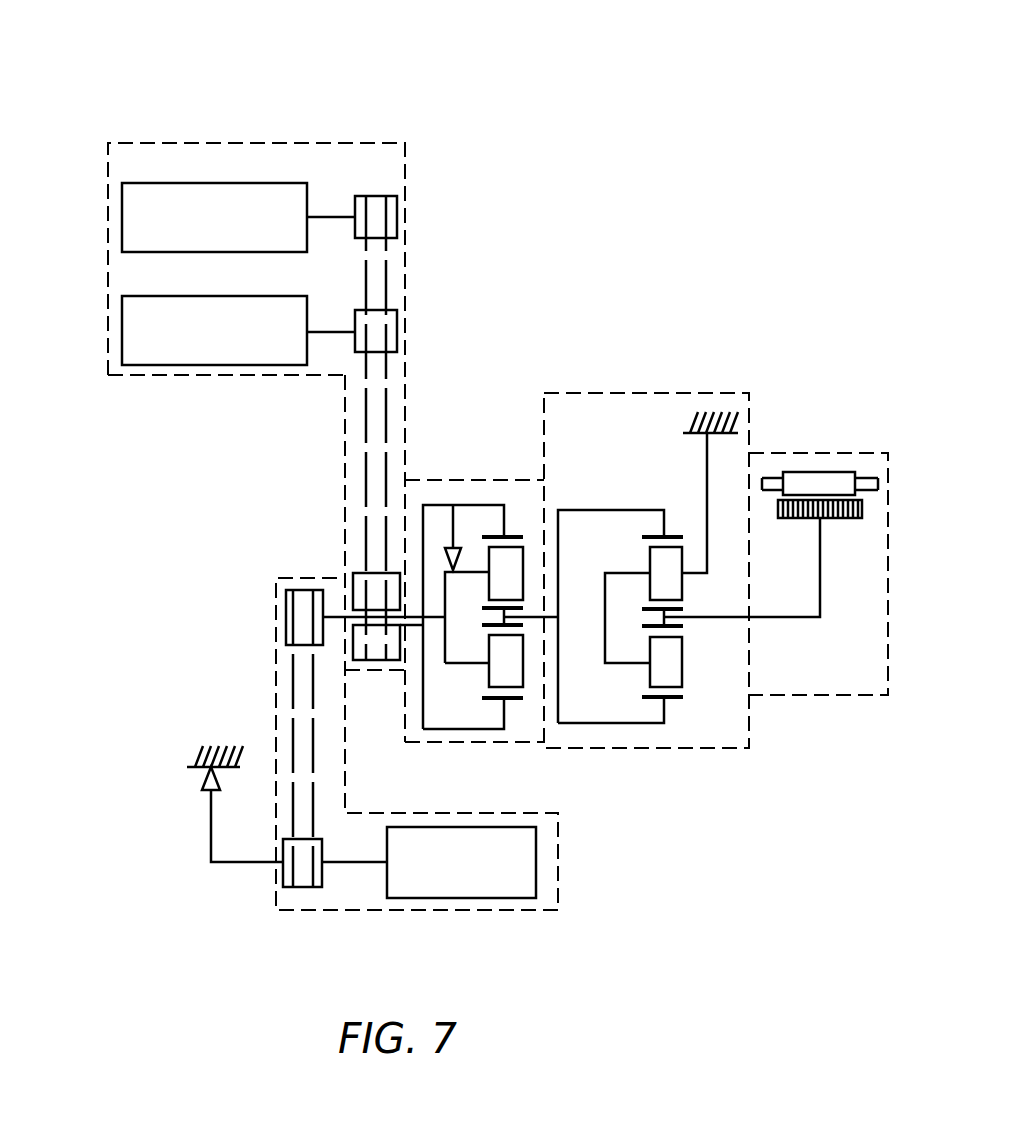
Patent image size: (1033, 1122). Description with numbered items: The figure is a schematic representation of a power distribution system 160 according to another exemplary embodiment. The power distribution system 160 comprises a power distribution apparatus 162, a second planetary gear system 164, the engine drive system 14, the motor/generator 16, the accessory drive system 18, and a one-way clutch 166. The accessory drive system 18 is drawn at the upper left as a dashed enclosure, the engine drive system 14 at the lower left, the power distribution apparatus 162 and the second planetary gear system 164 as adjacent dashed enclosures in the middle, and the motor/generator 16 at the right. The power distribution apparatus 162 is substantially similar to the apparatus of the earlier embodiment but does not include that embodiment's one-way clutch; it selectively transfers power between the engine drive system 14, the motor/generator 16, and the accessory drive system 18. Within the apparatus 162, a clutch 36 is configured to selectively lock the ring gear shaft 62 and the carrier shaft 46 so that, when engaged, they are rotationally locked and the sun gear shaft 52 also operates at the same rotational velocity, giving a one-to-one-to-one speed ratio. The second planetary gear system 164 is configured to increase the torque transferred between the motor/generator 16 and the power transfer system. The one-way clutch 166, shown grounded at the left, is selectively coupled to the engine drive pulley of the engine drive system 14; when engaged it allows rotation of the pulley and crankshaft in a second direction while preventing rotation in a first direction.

The power distribution system 160 is at (96, 78).
The accessory drive system 18 is at (159, 141).
The power distribution apparatus 162 is at (425, 496).
The second planetary gear system 164 is at (564, 401).
The motor/generator 16 is at (847, 450).
The clutch 36 is at (462, 563).
The carrier shaft 46 is at (433, 622).
The sun gear shaft 52 is at (533, 622).
The ring gear shaft 62 is at (410, 627).
The one-way clutch 166 is at (192, 778).
The engine drive system 14 is at (555, 811).